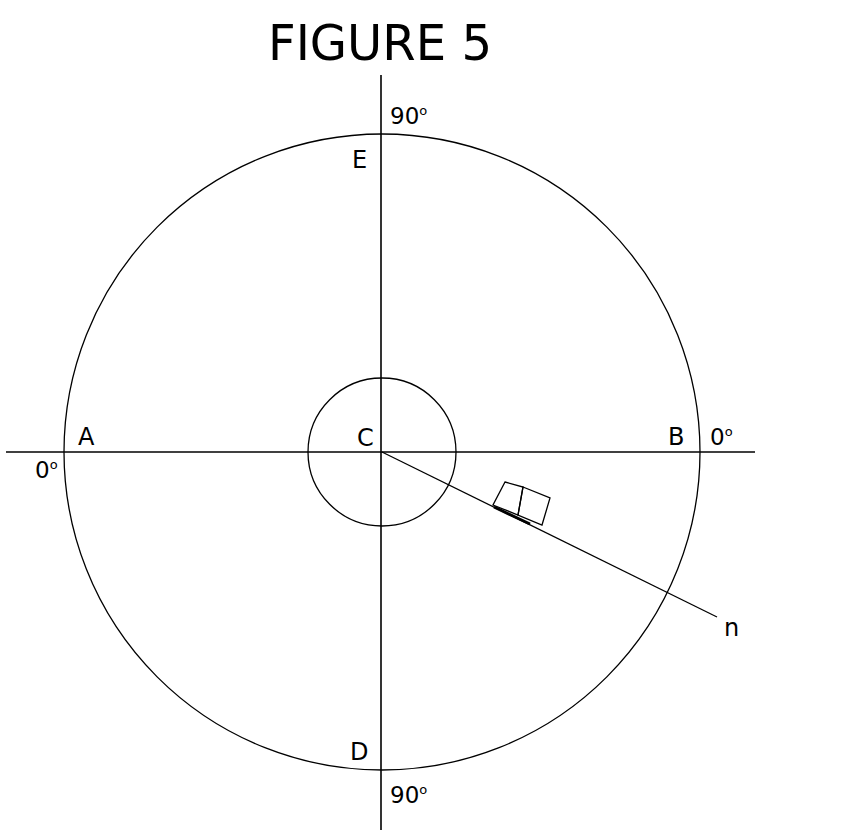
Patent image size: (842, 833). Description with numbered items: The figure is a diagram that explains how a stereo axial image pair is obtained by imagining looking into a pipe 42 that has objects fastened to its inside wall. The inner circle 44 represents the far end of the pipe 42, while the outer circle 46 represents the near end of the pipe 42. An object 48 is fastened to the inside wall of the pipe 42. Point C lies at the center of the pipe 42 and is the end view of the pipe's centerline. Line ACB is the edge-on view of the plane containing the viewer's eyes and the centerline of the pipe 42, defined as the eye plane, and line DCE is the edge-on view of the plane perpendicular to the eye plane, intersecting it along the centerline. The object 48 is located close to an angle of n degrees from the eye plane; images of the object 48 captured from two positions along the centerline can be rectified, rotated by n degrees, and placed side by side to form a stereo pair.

The pipe 42 is at (142, 222).
The inner circle 44 is at (323, 497).
The outer circle 46 is at (603, 223).
The object 48 is at (536, 494).